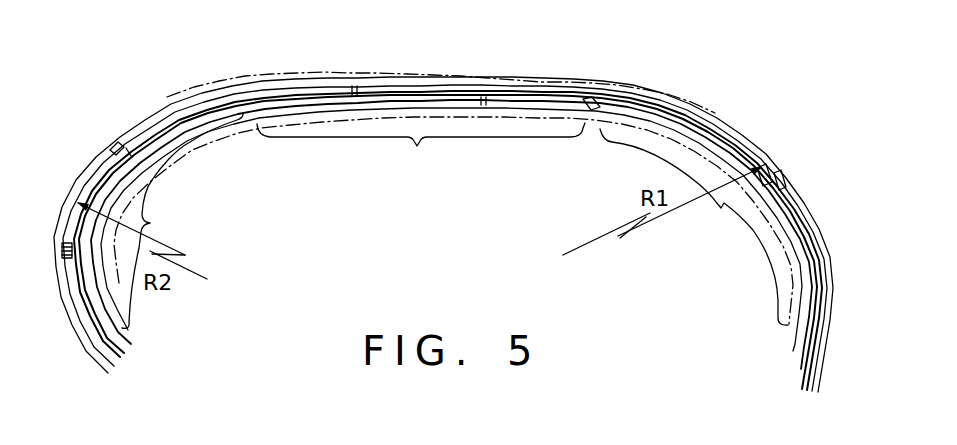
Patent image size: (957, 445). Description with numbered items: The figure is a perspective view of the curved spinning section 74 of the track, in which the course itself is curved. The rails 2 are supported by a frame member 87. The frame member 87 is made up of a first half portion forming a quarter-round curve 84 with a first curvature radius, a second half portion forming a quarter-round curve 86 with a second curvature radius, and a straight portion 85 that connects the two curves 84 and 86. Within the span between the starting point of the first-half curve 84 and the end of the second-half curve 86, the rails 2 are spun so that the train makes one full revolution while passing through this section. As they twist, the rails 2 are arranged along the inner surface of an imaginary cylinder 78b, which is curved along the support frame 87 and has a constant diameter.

The rails 2 is at (260, 110).
The curved spinning section 74 is at (491, 70).
The imaginary cylinder 78b is at (540, 80).
The quarter-round curve 84 is at (694, 227).
The straight portion 85 is at (421, 152).
The quarter-round curve 86 is at (152, 221).
The frame member 87 is at (752, 143).